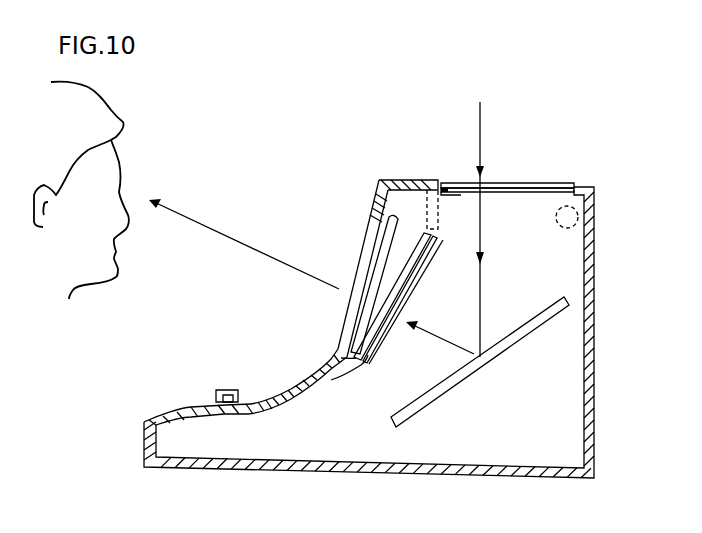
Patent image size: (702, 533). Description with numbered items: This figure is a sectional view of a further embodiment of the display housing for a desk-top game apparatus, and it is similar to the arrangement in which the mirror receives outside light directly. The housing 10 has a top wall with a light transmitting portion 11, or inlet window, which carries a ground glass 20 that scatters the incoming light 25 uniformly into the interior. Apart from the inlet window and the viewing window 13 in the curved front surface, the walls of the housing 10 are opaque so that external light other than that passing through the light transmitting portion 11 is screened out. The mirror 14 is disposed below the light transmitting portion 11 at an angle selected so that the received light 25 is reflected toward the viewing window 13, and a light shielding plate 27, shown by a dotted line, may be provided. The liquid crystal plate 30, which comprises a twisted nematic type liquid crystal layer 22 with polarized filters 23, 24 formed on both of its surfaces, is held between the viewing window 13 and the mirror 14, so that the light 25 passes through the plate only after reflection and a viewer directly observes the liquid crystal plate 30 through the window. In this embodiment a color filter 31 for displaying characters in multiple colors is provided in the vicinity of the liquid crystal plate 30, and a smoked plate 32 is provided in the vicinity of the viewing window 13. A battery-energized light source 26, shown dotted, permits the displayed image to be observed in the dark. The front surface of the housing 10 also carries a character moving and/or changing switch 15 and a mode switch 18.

The housing 10 is at (585, 417).
The light transmitting portion 11 is at (515, 181).
The viewing window 13 is at (361, 227).
The mirror 14 is at (552, 310).
The character moving and/or changing switch 15 is at (225, 388).
The mode switch 18 is at (238, 399).
The ground glass 20 is at (547, 182).
The twisted nematic type liquid crystal layer 22 is at (338, 355).
The polarized filter 23 is at (310, 376).
The polarized filter 24 is at (352, 340).
The light 25 is at (482, 140).
The light source 26 is at (578, 227).
The light shielding plate 27 is at (422, 212).
The liquid crystal plate 30 is at (433, 236).
The color filter 31 is at (372, 363).
The smoked plate 32 is at (380, 208).